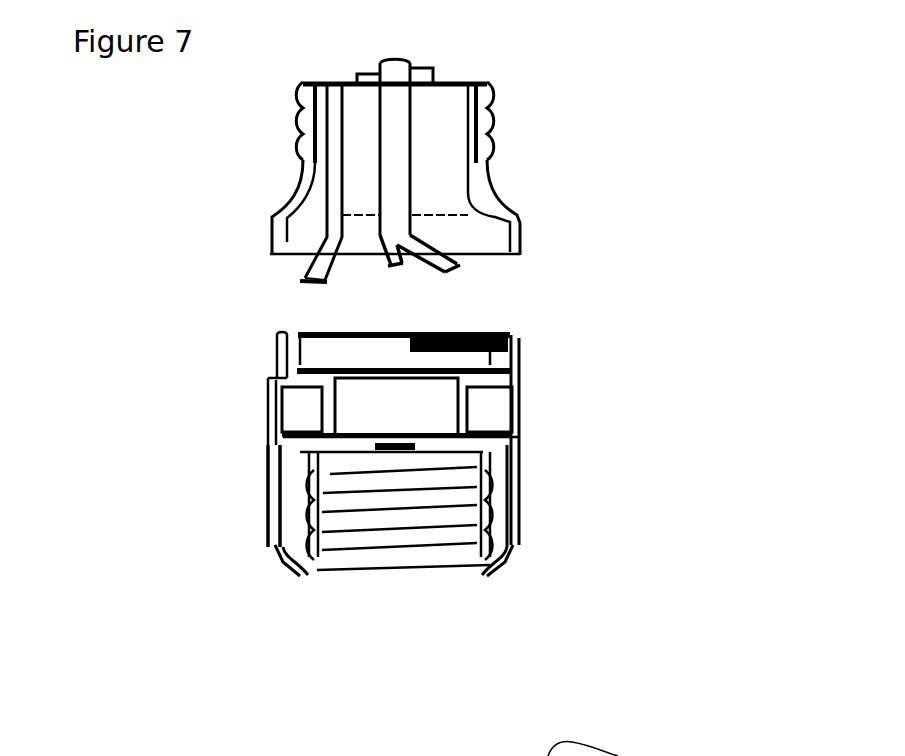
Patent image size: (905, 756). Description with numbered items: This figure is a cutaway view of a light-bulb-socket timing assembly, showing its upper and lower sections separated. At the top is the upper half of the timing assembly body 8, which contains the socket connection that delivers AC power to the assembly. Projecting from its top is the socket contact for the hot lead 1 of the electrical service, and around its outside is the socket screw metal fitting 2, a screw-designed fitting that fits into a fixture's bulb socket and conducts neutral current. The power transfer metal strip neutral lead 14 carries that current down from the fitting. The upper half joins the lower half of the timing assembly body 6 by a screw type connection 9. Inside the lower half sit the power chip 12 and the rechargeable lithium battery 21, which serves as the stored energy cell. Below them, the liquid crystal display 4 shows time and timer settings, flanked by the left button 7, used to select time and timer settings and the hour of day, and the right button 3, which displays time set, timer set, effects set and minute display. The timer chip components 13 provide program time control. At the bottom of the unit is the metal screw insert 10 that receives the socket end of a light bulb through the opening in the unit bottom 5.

The socket contact for hot lead 1 is at (400, 62).
The socket screw metal fitting 2 is at (495, 113).
The upper half of timing assembly body 8 is at (290, 208).
The power transfer metal strip neutral lead 14 is at (293, 273).
The power chip 12 is at (343, 320).
The rechargeable lithium battery 21 is at (500, 337).
The screw type connection 9 is at (270, 367).
The left button 7 is at (285, 420).
The right button 3 is at (497, 400).
The liquid crystal display 4 is at (447, 434).
The timer chip components 13 is at (298, 460).
The metal screw insert 10 is at (377, 513).
The opening in unit bottom 5 is at (408, 578).
The lower half of timing assembly body 6 is at (520, 543).